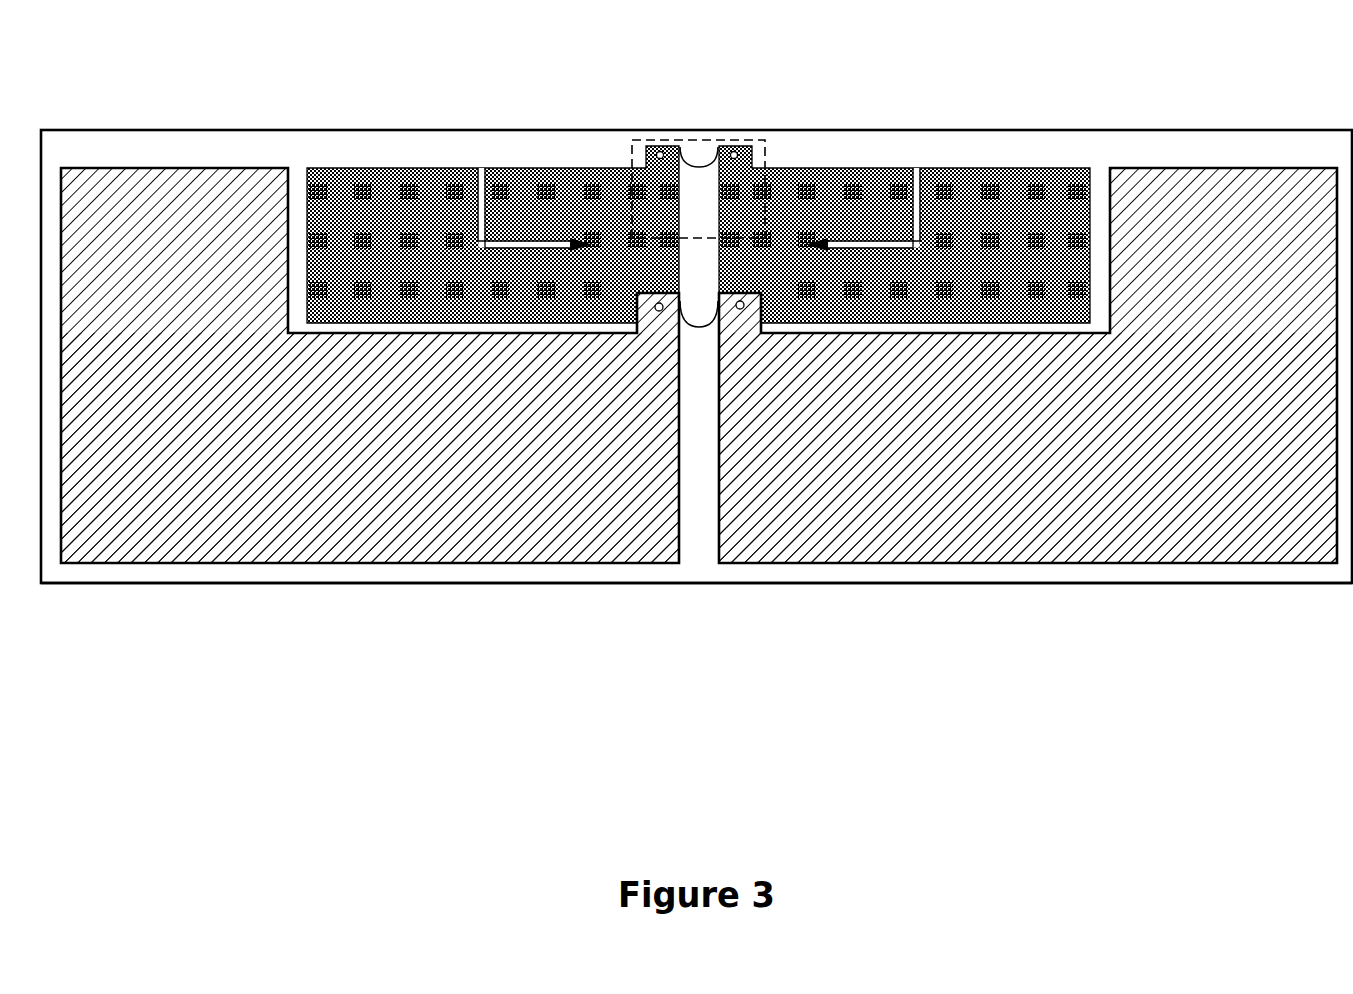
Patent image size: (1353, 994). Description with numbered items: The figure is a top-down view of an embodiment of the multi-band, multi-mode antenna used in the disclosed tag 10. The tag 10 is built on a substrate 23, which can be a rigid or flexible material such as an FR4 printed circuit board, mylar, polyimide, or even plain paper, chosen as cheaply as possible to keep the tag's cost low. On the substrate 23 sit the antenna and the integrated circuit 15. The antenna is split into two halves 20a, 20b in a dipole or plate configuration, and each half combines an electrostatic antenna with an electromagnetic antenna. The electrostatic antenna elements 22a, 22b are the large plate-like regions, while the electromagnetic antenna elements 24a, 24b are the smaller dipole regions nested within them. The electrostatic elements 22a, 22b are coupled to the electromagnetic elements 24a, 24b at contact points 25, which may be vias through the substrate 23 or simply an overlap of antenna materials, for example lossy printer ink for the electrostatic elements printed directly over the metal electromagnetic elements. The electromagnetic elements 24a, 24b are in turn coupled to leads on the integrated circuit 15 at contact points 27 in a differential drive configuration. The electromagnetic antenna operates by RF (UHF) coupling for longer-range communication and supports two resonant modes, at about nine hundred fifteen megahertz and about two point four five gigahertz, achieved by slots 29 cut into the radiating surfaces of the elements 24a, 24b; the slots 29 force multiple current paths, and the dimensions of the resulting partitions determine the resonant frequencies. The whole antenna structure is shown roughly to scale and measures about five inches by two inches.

The tag 10 is at (240, 620).
The integrated circuit 15 is at (695, 135).
The multi-band, multi-mode antenna element 20a is at (333, 195).
The multi-band, multi-mode antenna element 20b is at (1059, 193).
The electrostatic antenna element 22a is at (485, 524).
The electrostatic antenna element 22b is at (978, 522).
The substrate 23 is at (581, 573).
The electromagnetic antenna element 24a is at (397, 187).
The electromagnetic antenna element 24b is at (1026, 187).
The contact points 25 is at (699, 333).
The contact points 27 is at (699, 180).
The slots 29 is at (593, 246).